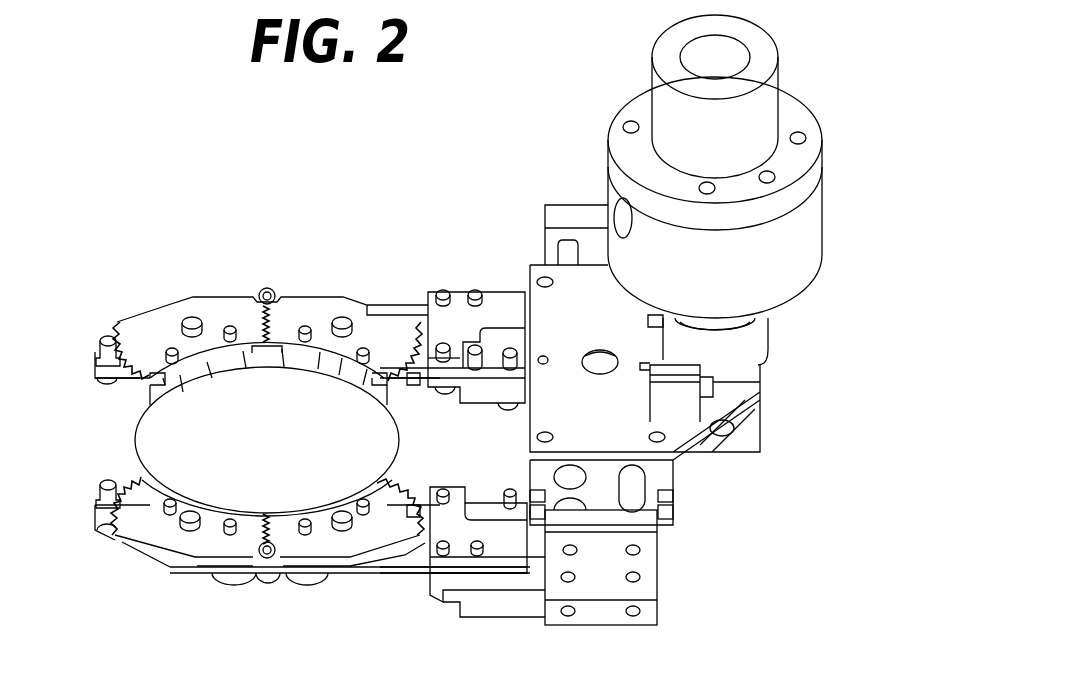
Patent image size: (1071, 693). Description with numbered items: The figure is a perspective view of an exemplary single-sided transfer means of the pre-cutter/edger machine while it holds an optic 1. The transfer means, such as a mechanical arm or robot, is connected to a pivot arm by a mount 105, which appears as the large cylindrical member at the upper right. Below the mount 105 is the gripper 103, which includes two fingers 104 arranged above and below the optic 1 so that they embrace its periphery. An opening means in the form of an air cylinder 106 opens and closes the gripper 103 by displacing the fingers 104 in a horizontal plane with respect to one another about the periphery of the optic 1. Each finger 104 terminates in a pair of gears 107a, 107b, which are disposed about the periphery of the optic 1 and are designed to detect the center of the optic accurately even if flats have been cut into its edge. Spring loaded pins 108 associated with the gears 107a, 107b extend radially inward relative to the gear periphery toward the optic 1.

The optic 1 is at (158, 443).
The gripper 103 is at (148, 566).
The fingers 104 is at (452, 325).
The mount 105 is at (827, 211).
The air cylinder 106 is at (602, 490).
The gear 107a is at (215, 316).
The gear 107b is at (310, 316).
The clamp fastener 108 is at (168, 346).